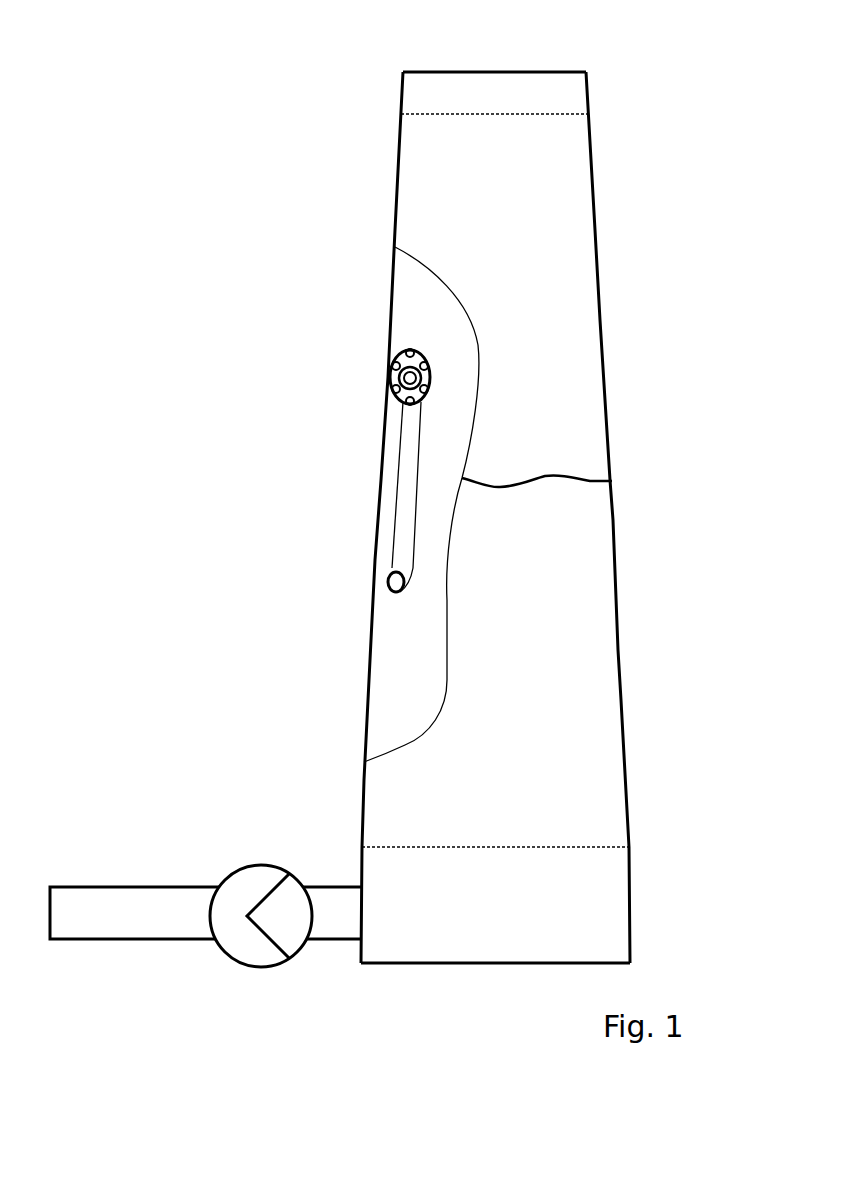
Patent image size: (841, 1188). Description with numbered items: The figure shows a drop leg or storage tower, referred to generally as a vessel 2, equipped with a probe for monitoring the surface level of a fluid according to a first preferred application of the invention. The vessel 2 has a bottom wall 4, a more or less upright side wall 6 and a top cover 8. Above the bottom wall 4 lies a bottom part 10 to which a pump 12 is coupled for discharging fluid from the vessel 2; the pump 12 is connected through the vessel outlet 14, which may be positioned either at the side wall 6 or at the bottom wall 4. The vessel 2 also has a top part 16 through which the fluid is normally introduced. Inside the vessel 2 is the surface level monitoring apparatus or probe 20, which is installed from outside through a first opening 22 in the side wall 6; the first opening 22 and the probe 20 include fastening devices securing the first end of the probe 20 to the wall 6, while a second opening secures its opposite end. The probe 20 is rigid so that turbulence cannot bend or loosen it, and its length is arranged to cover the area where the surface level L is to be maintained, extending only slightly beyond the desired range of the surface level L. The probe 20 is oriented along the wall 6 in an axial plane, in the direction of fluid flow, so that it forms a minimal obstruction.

The vessel 2 is at (490, 203).
The bottom wall 4 is at (458, 964).
The side wall 6 is at (619, 652).
The top cover 8 is at (507, 70).
The bottom part 10 is at (514, 925).
The pump 12 is at (240, 897).
The vessel outlet 14 is at (342, 908).
The top part 16 is at (447, 95).
The probe 20 is at (400, 482).
The first opening 22 is at (393, 356).
The surface level L is at (580, 475).